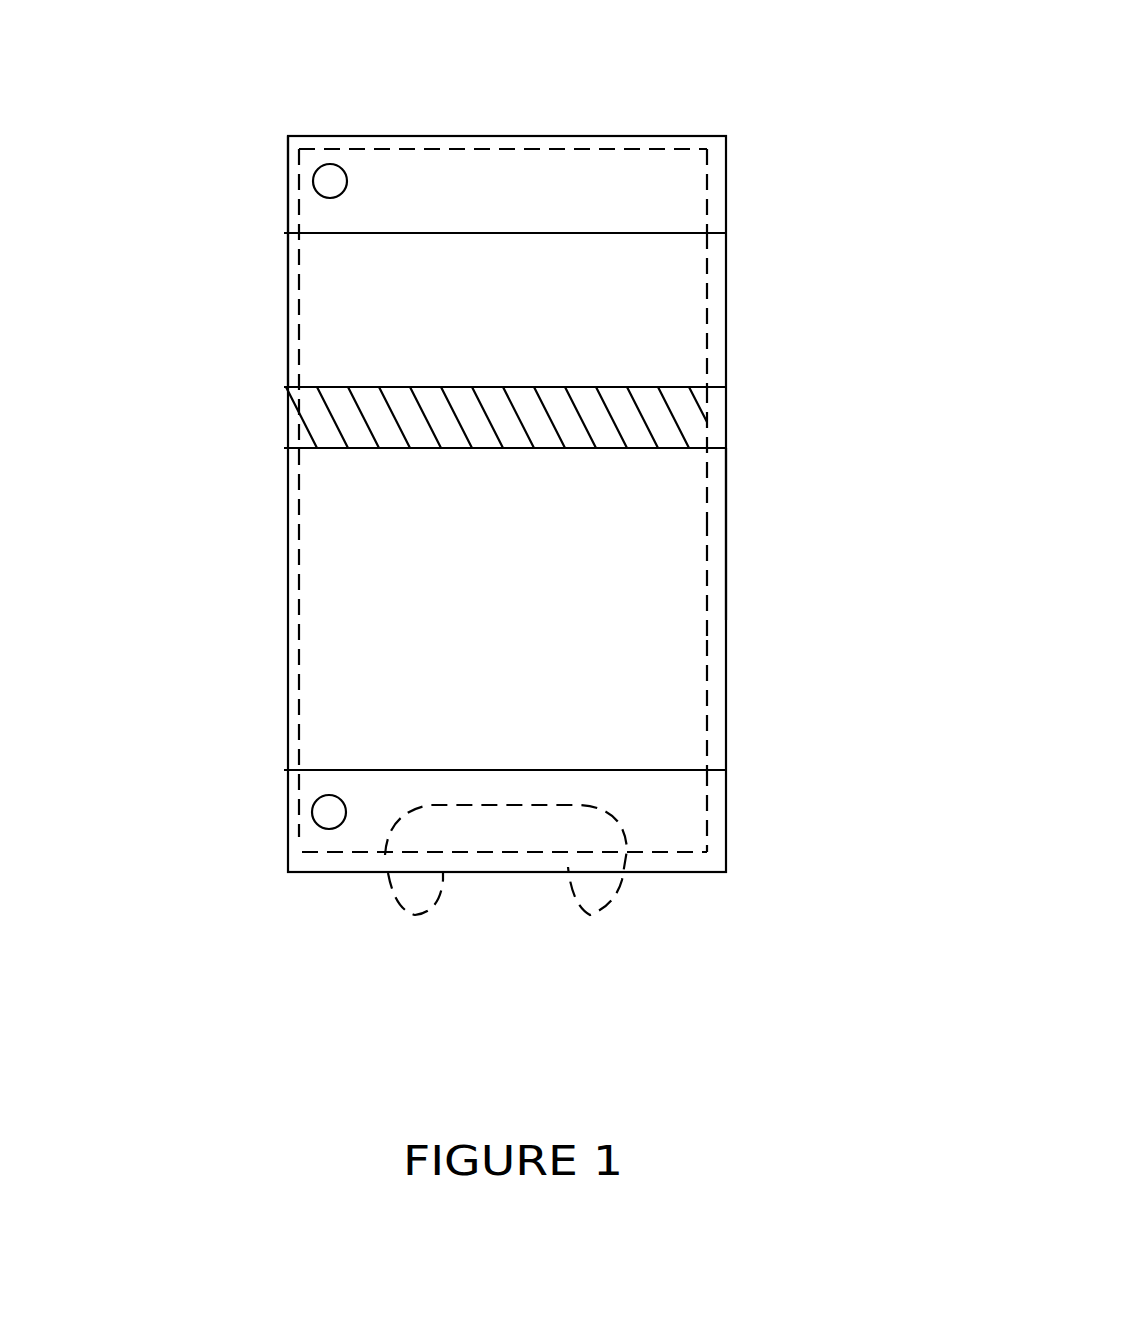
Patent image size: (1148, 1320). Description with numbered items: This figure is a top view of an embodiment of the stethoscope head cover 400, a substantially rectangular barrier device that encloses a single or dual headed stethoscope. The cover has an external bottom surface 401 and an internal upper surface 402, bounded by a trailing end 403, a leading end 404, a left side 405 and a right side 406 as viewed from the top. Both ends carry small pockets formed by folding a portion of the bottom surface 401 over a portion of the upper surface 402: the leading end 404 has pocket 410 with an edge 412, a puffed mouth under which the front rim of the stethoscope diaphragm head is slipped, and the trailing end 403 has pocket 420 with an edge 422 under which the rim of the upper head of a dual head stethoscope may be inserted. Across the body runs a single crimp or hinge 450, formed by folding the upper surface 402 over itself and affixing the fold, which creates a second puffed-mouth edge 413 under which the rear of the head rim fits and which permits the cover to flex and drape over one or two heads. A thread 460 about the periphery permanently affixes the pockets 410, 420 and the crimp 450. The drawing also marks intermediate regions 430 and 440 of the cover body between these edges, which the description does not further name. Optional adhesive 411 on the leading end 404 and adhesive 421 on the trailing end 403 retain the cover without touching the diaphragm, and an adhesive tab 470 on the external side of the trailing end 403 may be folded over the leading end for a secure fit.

The stethoscope head cover 400 is at (682, 88).
The external (bottom) surface 401 is at (522, 138).
The internal (upper) surface 402 is at (400, 180).
The trailing end 403 is at (338, 885).
The leading end 404 is at (318, 130).
The left side 405 is at (277, 365).
The right side 406 is at (730, 495).
The pocket 410 is at (676, 211).
The adhesive 411 is at (320, 195).
The edge 412 is at (488, 245).
The edge 413 is at (535, 385).
The pocket 420 is at (730, 818).
The adhesive 421 is at (320, 812).
The edge 422 is at (470, 767).
The second panel 430 is at (670, 304).
The main panel 440 is at (660, 573).
The crimp or hinge 450 is at (653, 427).
The thread 460 is at (703, 673).
The tab 470 is at (640, 893).